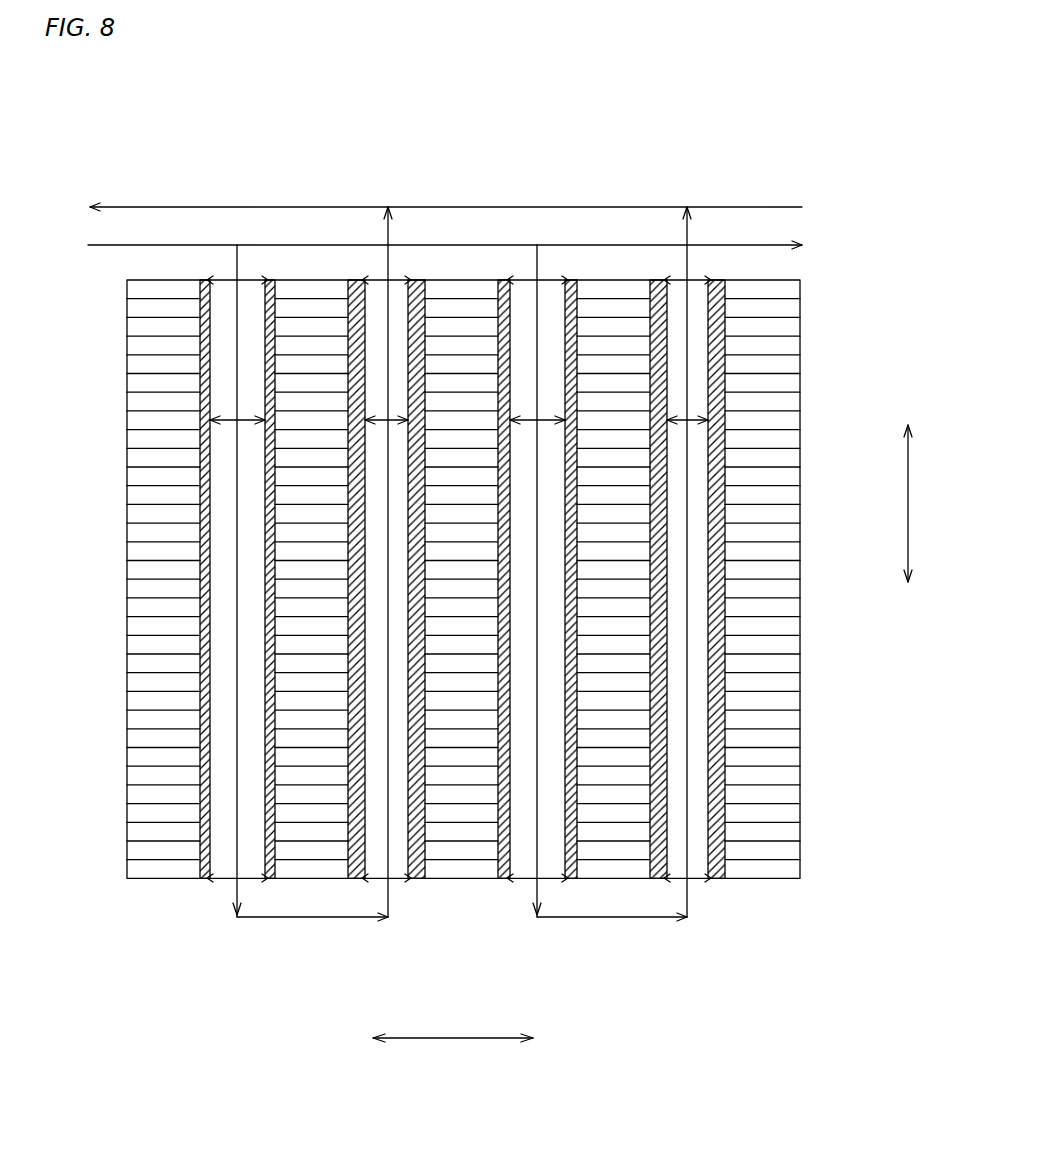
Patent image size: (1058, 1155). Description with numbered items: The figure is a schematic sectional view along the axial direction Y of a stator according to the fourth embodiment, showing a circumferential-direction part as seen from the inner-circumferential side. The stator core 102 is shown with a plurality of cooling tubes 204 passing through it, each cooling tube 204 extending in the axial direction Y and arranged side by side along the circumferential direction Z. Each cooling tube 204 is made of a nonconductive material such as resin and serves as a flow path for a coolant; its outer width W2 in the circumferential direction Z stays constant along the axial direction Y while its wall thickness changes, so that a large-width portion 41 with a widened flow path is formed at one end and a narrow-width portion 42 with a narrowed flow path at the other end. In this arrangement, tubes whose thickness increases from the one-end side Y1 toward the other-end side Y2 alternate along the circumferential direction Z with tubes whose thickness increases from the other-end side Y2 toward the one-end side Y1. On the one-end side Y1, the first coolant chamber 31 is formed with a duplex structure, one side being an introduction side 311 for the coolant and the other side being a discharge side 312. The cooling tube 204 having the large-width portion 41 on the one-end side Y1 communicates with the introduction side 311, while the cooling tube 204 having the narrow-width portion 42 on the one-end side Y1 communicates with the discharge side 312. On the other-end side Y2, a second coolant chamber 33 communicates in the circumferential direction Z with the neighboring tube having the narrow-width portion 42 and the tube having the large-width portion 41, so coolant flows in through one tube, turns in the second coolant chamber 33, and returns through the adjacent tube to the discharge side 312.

The first coolant chamber 31 is at (499, 173).
The introduction side 311 is at (750, 245).
The discharge side 312 is at (748, 207).
The large-width portion 41 is at (228, 278).
The narrow-width portion 42 is at (378, 278).
The second coolant chamber 33 is at (300, 917).
The outer width in the circumferential direction W2 is at (365, 418).
The stator core 102 is at (770, 427).
The cooling tube 204 is at (705, 597).
The axial direction Y is at (910, 502).
The one-end side in the axial direction Y1 is at (909, 407).
The other-end side in the axial direction Y2 is at (907, 606).
The circumferential direction Z is at (452, 1042).